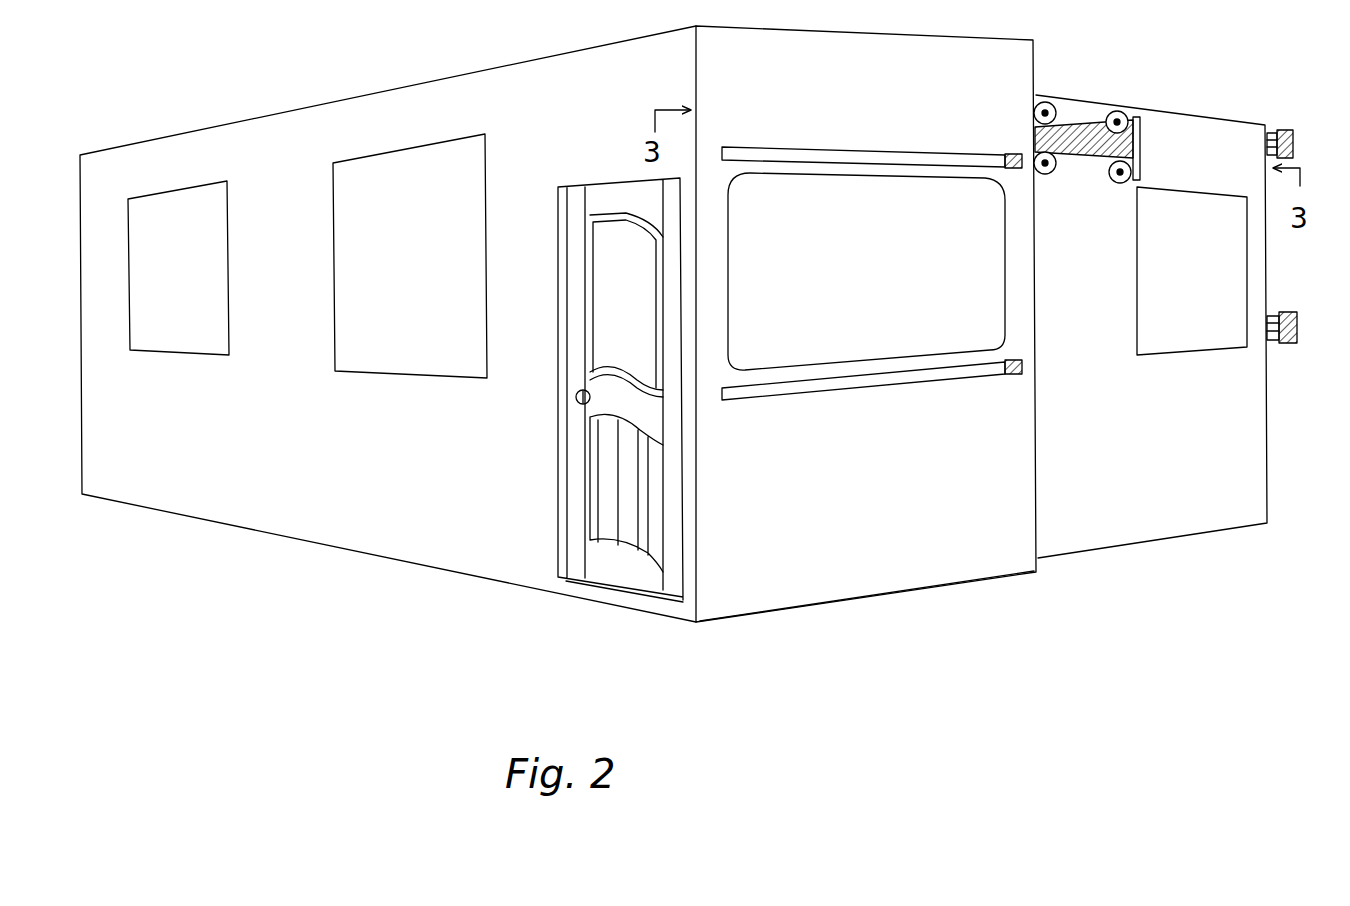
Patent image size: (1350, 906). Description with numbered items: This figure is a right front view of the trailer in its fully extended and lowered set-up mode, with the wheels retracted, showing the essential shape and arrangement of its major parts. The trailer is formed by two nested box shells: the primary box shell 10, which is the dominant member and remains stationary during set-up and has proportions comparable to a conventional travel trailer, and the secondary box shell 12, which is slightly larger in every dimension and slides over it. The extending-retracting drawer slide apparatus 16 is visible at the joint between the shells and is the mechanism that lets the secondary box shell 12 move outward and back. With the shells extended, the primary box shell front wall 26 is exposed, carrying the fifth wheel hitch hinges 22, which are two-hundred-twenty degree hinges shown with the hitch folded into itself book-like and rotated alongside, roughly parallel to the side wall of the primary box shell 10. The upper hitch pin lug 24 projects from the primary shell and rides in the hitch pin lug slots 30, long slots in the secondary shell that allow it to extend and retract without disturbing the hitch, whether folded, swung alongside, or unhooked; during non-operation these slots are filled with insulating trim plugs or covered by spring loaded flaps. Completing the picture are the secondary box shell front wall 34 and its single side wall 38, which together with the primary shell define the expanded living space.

The primary box shell 10 is at (712, 336).
The secondary box shell 12 is at (903, 606).
The drawer slide apparatus 16 is at (1075, 174).
The hitch hinges 22 is at (1320, 157).
The upper hitch pin lug 24 is at (990, 157).
The primary box shell front wall 26 is at (1255, 443).
The hitch pin lug slots 30 is at (905, 157).
The secondary box shell front wall 34 is at (950, 565).
The secondary box shell single side wall 38 is at (277, 520).